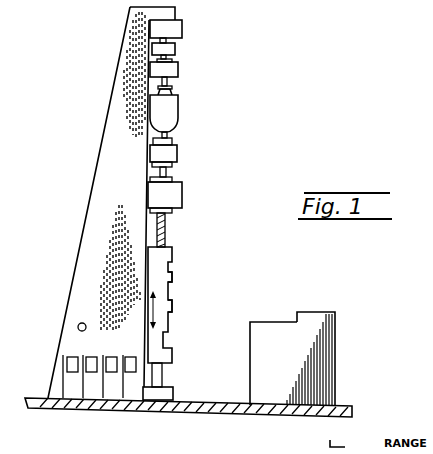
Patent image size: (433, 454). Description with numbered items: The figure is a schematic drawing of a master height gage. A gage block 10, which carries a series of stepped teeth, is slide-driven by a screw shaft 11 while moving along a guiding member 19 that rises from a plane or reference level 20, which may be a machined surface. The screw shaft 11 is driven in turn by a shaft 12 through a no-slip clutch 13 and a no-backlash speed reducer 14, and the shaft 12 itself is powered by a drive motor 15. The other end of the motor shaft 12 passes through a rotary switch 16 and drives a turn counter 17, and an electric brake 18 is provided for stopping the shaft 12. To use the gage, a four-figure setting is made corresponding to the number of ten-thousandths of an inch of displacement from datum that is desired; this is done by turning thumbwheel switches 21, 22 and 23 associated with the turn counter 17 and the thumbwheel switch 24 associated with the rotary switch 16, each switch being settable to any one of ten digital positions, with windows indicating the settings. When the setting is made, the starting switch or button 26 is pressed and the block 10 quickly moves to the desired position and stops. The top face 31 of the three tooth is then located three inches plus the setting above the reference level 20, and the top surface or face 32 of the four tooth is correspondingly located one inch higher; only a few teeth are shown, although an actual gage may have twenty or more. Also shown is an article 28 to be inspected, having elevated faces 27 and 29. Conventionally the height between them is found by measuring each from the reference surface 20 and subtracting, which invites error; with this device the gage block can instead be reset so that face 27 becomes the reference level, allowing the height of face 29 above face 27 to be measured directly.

The gage block 10 is at (173, 257).
The screw shaft 11 is at (165, 219).
The shaft 12 is at (170, 84).
The no-slip clutch 13 is at (177, 152).
The no-backlash speed reducer 14 is at (182, 190).
The drive motor 15 is at (178, 110).
The rotary switch 16 is at (178, 68).
The turn counter 17 is at (182, 28).
The electric brake 18 is at (176, 47).
The guiding member 19 is at (163, 376).
The reference level 20 is at (197, 400).
The thumbwheel switch 21 is at (62, 370).
The thumbwheel switch 22 is at (83, 370).
The thumbwheel switch 23 is at (103, 370).
The thumbwheel switch 24 is at (123, 370).
The starting switch 26 is at (78, 326).
The face 27 is at (272, 320).
The article 28 is at (322, 350).
The face 29 is at (303, 311).
The top face 31 is at (172, 308).
The top surface 32 is at (173, 278).